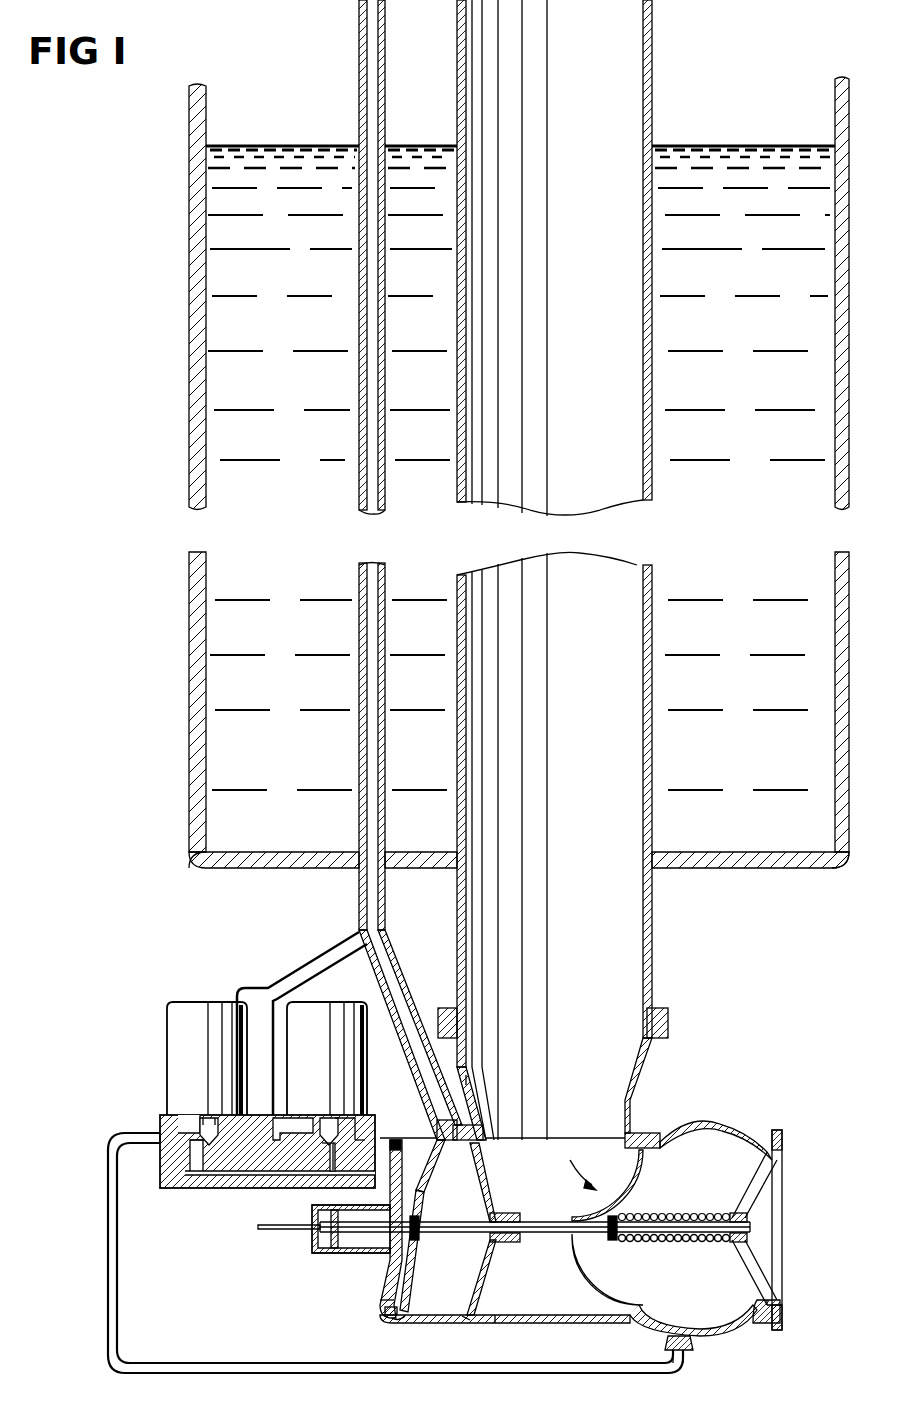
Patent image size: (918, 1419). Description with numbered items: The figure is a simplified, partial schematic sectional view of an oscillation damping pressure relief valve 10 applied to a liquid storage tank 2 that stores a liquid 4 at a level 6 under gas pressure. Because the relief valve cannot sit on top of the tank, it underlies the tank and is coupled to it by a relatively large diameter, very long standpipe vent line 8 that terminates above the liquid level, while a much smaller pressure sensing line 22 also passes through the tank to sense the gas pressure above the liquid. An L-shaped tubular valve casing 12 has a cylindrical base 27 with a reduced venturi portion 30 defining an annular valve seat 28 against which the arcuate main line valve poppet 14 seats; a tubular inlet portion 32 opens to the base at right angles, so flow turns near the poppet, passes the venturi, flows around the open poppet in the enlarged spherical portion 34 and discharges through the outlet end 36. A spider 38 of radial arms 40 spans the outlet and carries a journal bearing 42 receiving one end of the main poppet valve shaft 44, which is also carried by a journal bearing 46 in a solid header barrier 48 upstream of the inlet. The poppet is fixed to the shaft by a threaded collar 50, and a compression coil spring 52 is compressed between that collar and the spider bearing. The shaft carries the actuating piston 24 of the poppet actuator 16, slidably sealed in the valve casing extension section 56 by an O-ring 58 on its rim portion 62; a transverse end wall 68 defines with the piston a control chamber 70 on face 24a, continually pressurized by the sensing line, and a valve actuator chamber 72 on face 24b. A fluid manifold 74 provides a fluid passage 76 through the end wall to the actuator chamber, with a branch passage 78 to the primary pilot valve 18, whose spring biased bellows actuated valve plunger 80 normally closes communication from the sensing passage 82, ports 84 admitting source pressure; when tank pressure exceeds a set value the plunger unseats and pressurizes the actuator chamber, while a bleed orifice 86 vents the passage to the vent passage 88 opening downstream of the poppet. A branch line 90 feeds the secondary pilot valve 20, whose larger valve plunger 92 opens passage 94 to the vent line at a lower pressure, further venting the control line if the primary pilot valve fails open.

The liquid storage tank 2 is at (666, 868).
The liquid 4 is at (748, 822).
The liquid level 6 is at (668, 146).
The standpipe vent line 8 is at (658, 680).
The pressure relief valve 10 is at (655, 1126).
The valve casing 12 is at (540, 1324).
The main line valve poppet 14 is at (640, 1168).
The poppet actuator 16 is at (440, 1325).
The primary pilot valve 18 is at (325, 1000).
The secondary pilot valve 20 is at (183, 1000).
The pressure sensing line 22 is at (386, 884).
The actuating piston 24 is at (458, 1188).
The piston face 24a is at (420, 1162).
The piston face 24b is at (418, 1256).
The cylindrical base 27 is at (497, 1324).
The valve seat 28 is at (635, 1147).
The venturi portion 30 is at (668, 1142).
The tubular inlet portion 32 is at (470, 1084).
The spherical portion 34 is at (722, 1125).
The outlet end 36 is at (785, 1170).
The spider 38 is at (760, 1202).
The radial arms 40 is at (745, 1183).
The journal bearing 42 is at (746, 1234).
The main poppet valve shaft 44 is at (543, 1222).
The journal bearing 46 is at (505, 1213).
The header barrier 48 is at (483, 1171).
The threaded collar 50 is at (620, 1218).
The compression coil spring 52 is at (668, 1242).
The valve casing extension section 56 is at (407, 1325).
The O-ring 58 is at (397, 1140).
The rim portion 62 is at (384, 1313).
The transverse end wall 68 is at (391, 1270).
The control chamber 70 is at (458, 1286).
The valve actuator chamber 72 is at (386, 1297).
The fluid manifold 74 is at (192, 1190).
The fluid passage 76 is at (312, 1175).
The branch passage 78 is at (322, 1172).
The valve plunger 80 is at (340, 1112).
The fluid passage 82 is at (300, 1125).
The ports 84 is at (368, 1120).
The bleed orifice 86 is at (158, 1188).
The vent passage 88 is at (158, 1135).
The branch line 90 is at (236, 992).
The valve plunger 92 is at (203, 1115).
The passage 94 is at (206, 1168).